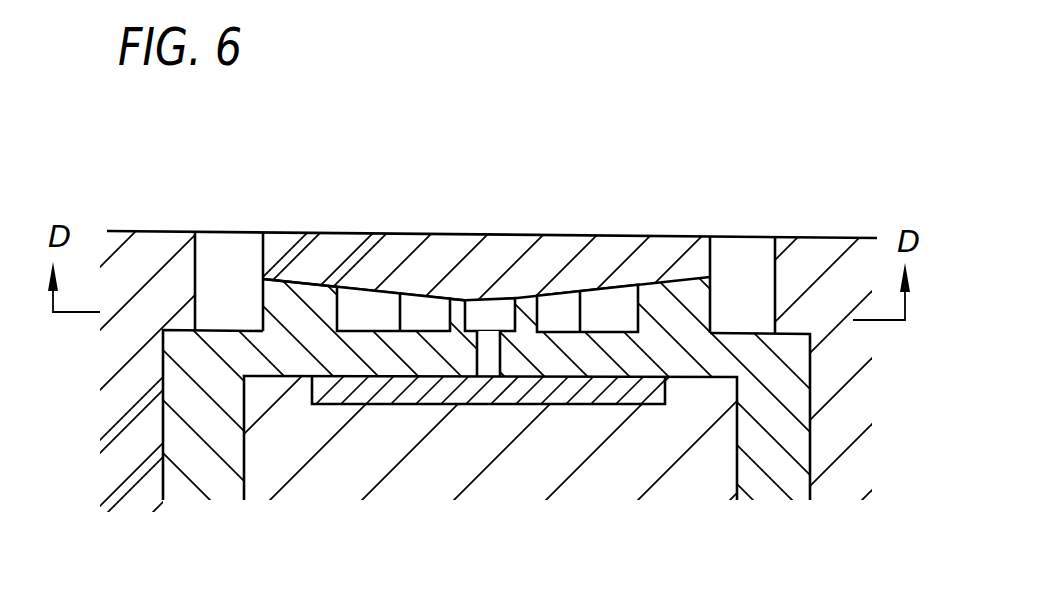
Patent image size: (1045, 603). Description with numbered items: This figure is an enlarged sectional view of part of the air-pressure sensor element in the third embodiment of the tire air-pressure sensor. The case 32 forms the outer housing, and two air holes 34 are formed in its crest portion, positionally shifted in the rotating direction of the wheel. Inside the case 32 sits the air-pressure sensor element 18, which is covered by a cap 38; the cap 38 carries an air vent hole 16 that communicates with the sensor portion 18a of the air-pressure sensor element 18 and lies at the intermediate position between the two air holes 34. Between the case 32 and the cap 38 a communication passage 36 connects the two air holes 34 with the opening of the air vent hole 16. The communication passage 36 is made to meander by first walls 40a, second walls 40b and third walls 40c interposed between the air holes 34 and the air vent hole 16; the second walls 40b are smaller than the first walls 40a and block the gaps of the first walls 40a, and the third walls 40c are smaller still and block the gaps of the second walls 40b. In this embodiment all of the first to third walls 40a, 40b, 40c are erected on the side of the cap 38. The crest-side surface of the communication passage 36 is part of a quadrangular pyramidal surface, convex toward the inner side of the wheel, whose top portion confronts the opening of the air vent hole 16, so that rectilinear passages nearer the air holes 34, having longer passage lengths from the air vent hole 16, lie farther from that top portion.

The air vent hole 16 is at (488, 370).
The air-pressure sensor element 18 is at (592, 493).
The sensor portion 18a is at (620, 397).
The case 32 is at (823, 257).
The air holes 34 is at (230, 258).
The communication passage 36 is at (365, 295).
The cap 38 is at (773, 470).
The first walls 40a is at (303, 313).
The second walls 40b is at (560, 303).
The third walls 40c is at (458, 305).